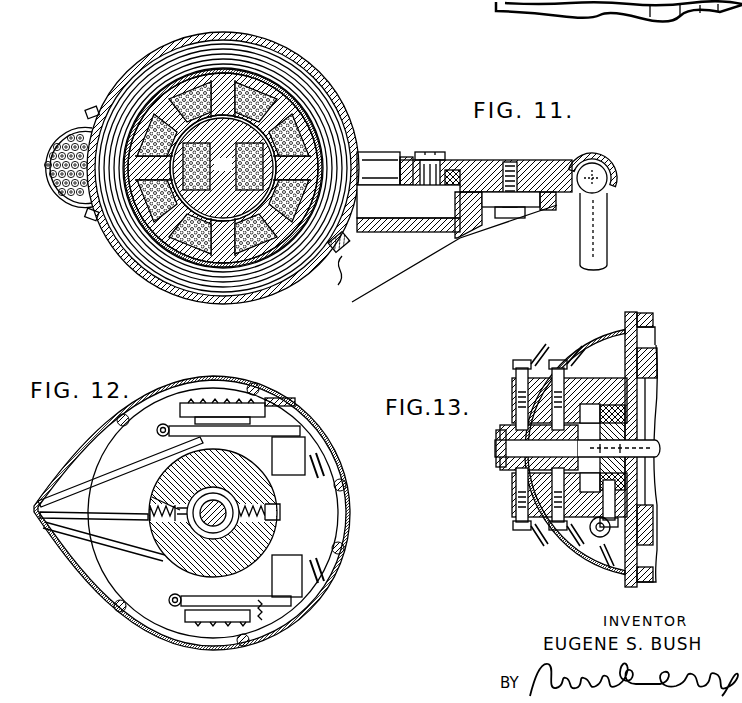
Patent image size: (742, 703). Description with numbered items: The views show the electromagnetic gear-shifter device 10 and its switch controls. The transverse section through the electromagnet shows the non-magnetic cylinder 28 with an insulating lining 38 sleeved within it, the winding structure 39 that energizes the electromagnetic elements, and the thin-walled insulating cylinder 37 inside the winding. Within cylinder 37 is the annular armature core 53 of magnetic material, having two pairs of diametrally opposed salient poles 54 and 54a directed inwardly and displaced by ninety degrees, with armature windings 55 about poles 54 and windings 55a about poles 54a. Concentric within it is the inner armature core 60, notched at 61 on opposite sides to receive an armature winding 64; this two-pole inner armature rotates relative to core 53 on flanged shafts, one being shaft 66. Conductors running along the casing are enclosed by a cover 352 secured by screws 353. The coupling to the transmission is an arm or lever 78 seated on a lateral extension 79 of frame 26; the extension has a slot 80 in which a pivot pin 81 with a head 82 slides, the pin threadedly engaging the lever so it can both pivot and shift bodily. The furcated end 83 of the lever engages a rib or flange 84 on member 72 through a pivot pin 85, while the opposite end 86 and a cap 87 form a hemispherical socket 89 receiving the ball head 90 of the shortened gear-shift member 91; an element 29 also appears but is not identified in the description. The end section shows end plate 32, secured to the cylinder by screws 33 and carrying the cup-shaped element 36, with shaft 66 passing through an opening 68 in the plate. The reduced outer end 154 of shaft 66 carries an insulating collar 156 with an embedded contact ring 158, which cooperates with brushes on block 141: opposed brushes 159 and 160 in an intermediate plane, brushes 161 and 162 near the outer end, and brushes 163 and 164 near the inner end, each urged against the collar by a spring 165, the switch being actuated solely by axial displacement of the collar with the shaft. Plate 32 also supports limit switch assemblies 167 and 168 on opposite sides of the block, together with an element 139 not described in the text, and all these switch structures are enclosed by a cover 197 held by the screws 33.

In FIG. 11, the motor assembly 10 is at (99, 245).
In FIG. 12, the motor assembly 10 is at (256, 390).
In FIG. 11, the frame 26 is at (338, 285).
In FIG. 11, the cylinder 28 is at (152, 62).
In FIG. 13, the cylinder 28 is at (642, 312).
In FIG. 11, the cable clamp 29 is at (346, 250).
In FIG. 13, the end plate 32 is at (642, 336).
In FIG. 12, the screws 33 is at (340, 556).
In FIG. 13, the cup-shaped element 36 is at (658, 365).
In FIG. 11, the insulating cylinder 37 is at (149, 113).
In FIG. 13, the insulating cylinder 37 is at (658, 352).
In FIG. 11, the insulating lining 38 is at (190, 76).
In FIG. 11, the winding structure 39 is at (152, 88).
In FIG. 11, the armature core 53 is at (248, 105).
In FIG. 11, the salient poles 54 is at (232, 100).
In FIG. 11, the salient poles 54a is at (330, 128).
In FIG. 11, the armature windings 55 is at (198, 62).
In FIG. 11, the armature windings 55a is at (285, 160).
In FIG. 11, the inner armature core 60 is at (223, 168).
In FIG. 11, the longitudinal grooves 61 is at (163, 207).
In FIG. 11, the armature winding 64 is at (187, 225).
In FIG. 13, the flanged shaft element 66 is at (659, 442).
In FIG. 13, the opening 68 is at (630, 433).
In FIG. 11, the member 72 is at (407, 190).
In FIG. 11, the lever 78 is at (472, 170).
In FIG. 11, the lateral extension 79 is at (442, 232).
In FIG. 11, the slot 80 is at (490, 207).
In FIG. 11, the pivot pin 81 is at (508, 170).
In FIG. 11, the head 82 is at (506, 219).
In FIG. 11, the lever end 83 is at (452, 168).
In FIG. 11, the rib or flange 84 is at (452, 192).
In FIG. 11, the pivot pin 85 is at (427, 160).
In FIG. 11, the lever end 86 is at (580, 162).
In FIG. 11, the cap 87 is at (606, 165).
In FIG. 11, the hemispherical socket 89 is at (614, 178).
In FIG. 11, the ball type head 90 is at (606, 192).
In FIG. 11, the transmission gear-shift member 91 is at (600, 238).
In FIG. 12, the eye rod 139 is at (158, 434).
In FIG. 12, the block 141 is at (172, 448).
In FIG. 13, the outer shaft end 154 is at (500, 445).
In FIG. 12, the collar element 156 is at (270, 478).
In FIG. 13, the collar element 156 is at (503, 462).
In FIG. 12, the contact ring 158 is at (226, 490).
In FIG. 13, the contact ring 158 is at (585, 384).
In FIG. 12, the contact brush 159 is at (156, 508).
In FIG. 12, the contact brush 160 is at (278, 505).
In FIG. 13, the contact brush 161 is at (511, 412).
In FIG. 13, the contact brush 162 is at (510, 477).
In FIG. 13, the contact brush 163 is at (525, 412).
In FIG. 13, the contact brush 164 is at (510, 498).
In FIG. 12, the spring 165 is at (158, 528).
In FIG. 12, the limit switch assembly 167 is at (218, 404).
In FIG. 12, the limit switch assembly 168 is at (230, 612).
In FIG. 12, the cover 197 is at (336, 525).
In FIG. 13, the cover 197 is at (516, 542).
In FIG. 11, the cover 352 is at (52, 141).
In FIG. 11, the screws 353 is at (85, 113).